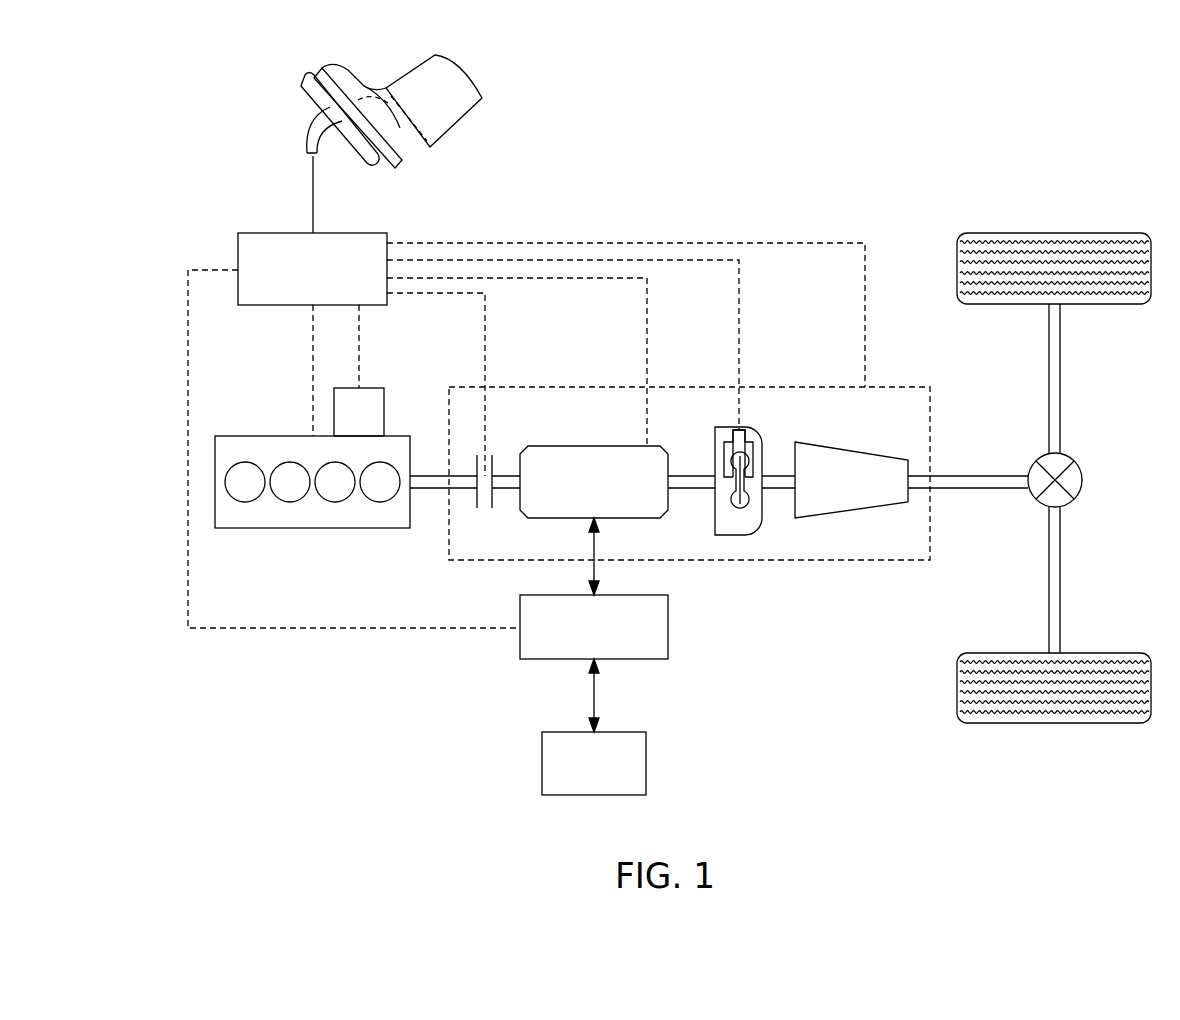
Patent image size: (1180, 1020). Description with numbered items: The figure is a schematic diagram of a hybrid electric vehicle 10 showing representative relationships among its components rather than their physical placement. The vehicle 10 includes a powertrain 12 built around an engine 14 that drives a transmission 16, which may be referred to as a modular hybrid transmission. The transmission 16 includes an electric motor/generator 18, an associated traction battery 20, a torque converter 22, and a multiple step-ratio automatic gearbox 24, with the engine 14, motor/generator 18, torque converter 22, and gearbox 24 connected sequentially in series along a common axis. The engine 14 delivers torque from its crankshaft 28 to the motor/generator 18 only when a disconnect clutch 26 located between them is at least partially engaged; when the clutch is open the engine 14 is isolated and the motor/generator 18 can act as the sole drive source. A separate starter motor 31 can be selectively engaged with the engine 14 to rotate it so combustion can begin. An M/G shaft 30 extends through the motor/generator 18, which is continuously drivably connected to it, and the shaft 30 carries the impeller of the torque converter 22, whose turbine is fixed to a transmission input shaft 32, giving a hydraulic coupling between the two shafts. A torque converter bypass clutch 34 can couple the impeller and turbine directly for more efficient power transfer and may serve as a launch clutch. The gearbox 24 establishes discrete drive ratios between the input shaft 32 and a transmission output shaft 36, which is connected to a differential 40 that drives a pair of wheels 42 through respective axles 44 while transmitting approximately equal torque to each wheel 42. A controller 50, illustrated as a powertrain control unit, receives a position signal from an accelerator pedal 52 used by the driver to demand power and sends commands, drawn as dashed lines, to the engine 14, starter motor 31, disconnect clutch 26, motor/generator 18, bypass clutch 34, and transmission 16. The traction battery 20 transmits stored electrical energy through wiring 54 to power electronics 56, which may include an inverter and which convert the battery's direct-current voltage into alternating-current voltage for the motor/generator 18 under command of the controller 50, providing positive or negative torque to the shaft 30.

The hybrid electric vehicle 10 is at (853, 137).
The powertrain 12 is at (398, 680).
The engine 14 is at (246, 436).
The transmission 16 is at (705, 386).
The electric motor/generator 18 is at (594, 446).
The traction battery 20 is at (542, 762).
The torque converter 22 is at (735, 535).
The gearbox 24 is at (852, 518).
The disconnect clutch 26 is at (493, 500).
The crankshaft 28 is at (440, 474).
The M/G shaft 30 is at (506, 472).
The starter motor 31 is at (372, 388).
The transmission input shaft 32 is at (777, 472).
The torque converter bypass clutch 34 is at (745, 437).
The transmission output shaft 36 is at (995, 475).
The differential 40 is at (1082, 480).
The wheels 42 is at (1053, 233).
The axles 44 is at (1060, 372).
The controller 50 is at (280, 233).
The accelerator pedal 52 is at (325, 103).
The wiring 54 is at (590, 695).
The power electronics 56 is at (668, 628).